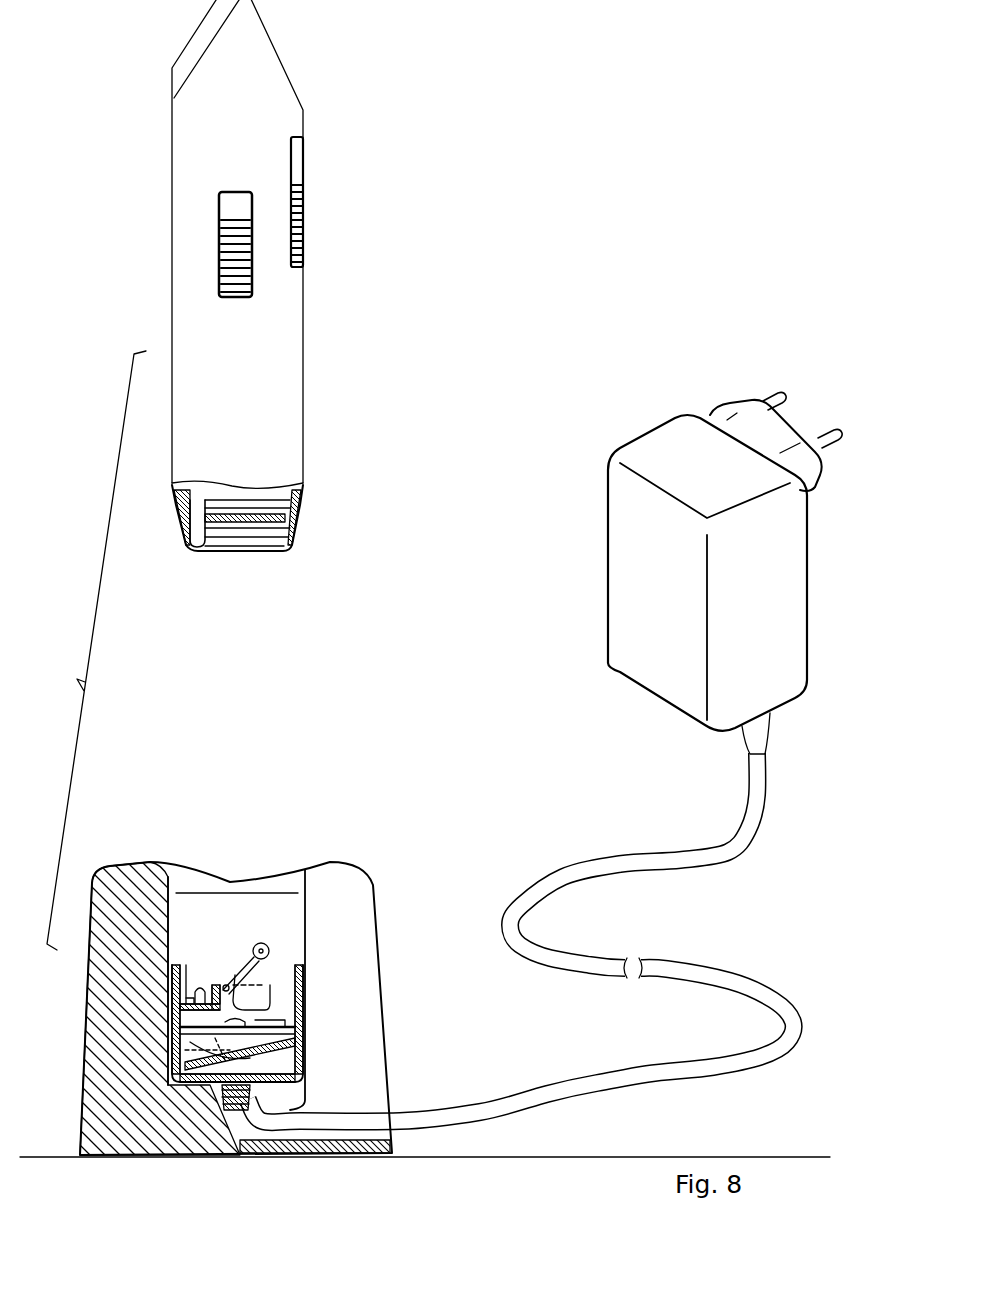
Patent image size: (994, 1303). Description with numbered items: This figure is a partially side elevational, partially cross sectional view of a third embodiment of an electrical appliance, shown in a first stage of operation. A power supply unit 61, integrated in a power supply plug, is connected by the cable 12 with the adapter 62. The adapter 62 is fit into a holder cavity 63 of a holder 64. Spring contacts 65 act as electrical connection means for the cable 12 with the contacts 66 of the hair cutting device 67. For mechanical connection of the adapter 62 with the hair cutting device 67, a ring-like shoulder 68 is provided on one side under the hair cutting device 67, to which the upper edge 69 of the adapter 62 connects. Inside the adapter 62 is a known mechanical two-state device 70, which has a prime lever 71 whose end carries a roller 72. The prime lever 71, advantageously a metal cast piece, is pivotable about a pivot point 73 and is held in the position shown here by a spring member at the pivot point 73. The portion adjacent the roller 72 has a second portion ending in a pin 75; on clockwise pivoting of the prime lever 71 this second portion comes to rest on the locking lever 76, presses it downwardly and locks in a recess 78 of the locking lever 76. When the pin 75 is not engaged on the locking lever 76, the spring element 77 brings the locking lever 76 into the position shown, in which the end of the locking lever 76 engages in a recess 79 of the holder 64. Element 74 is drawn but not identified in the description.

The cable 12 is at (455, 1113).
The power supply unit 61 is at (620, 490).
The adapter 62 is at (303, 1078).
The holder cavity 63 is at (262, 892).
The holder 64 is at (370, 953).
The spring contacts 65 is at (190, 998).
The contacts 66 is at (198, 553).
The hair cutting device 67 is at (294, 335).
The ring-like shoulder 68 is at (297, 513).
The upper edge 69 is at (307, 967).
The mechanical two-state device 70 is at (250, 993).
The prime lever 71 is at (237, 975).
The roller 72 is at (266, 945).
The pivot point 73 is at (227, 983).
The bottom contact 74 is at (265, 547).
The pin 75 is at (272, 1013).
The locking lever 76 is at (225, 1025).
The spring element 77 is at (300, 1043).
The recess 78 is at (235, 1033).
The recess 79 is at (167, 1040).